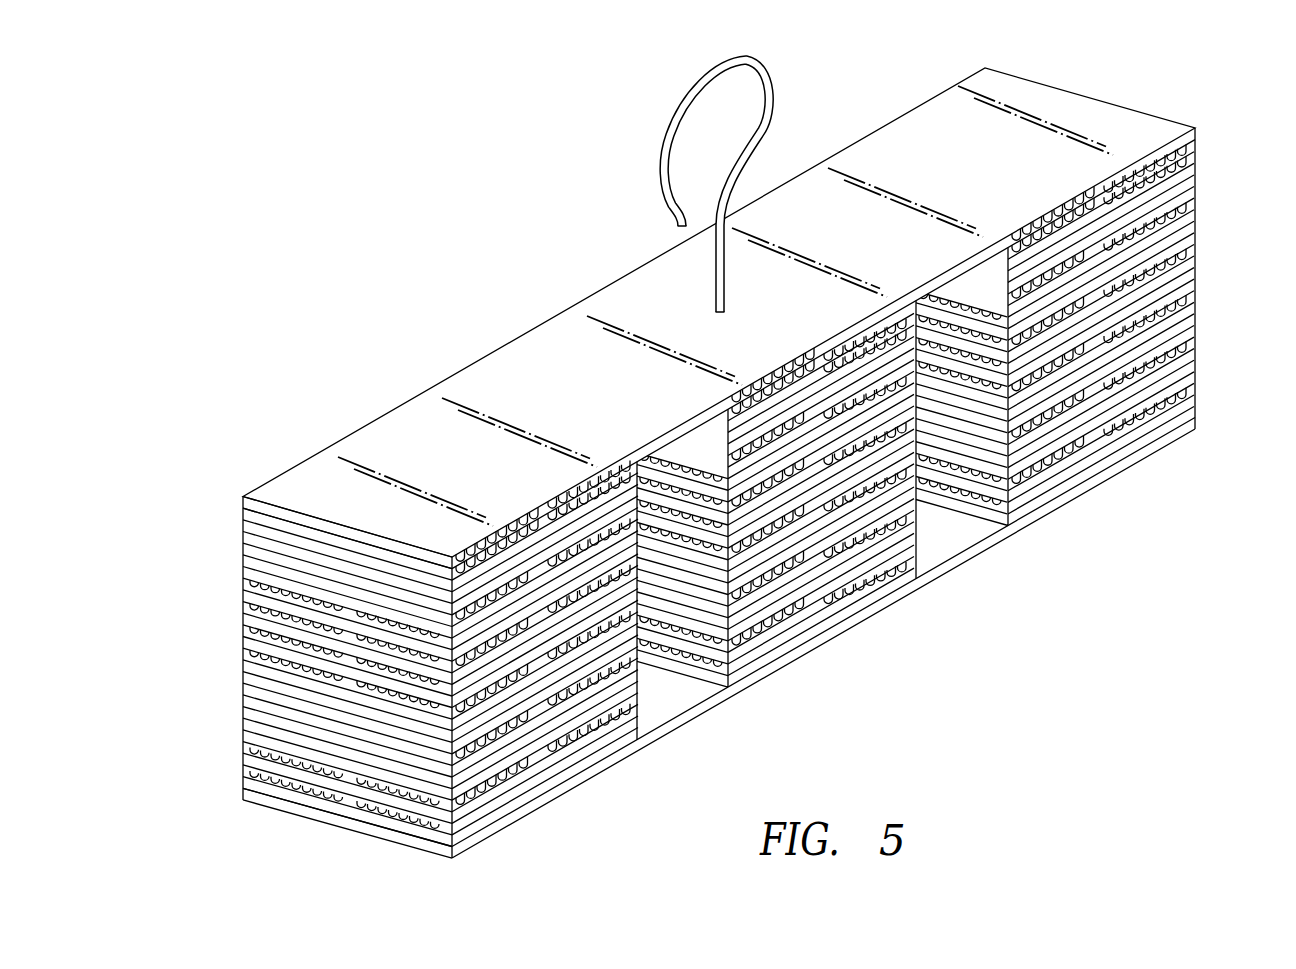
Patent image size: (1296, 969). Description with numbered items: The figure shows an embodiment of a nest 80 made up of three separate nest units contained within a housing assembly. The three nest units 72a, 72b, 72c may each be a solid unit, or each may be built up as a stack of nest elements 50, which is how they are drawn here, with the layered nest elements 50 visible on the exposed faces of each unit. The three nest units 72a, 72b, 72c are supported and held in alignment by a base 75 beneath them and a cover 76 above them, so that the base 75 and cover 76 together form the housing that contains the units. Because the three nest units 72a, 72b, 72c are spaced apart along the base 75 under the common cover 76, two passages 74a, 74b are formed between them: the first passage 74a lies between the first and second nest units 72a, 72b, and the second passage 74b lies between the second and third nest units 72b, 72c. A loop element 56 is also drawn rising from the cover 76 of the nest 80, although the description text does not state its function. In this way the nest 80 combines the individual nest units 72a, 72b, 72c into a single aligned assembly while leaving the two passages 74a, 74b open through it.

The nest elements 50 is at (257, 690).
The hook 56 is at (663, 150).
The nest unit 72a is at (515, 807).
The nest unit 72b is at (825, 625).
The nest unit 72c is at (1092, 472).
The passage 74a is at (663, 700).
The passage 74b is at (945, 540).
The base 75 is at (267, 812).
The cover 76 is at (292, 492).
The nest 80 is at (723, 470).